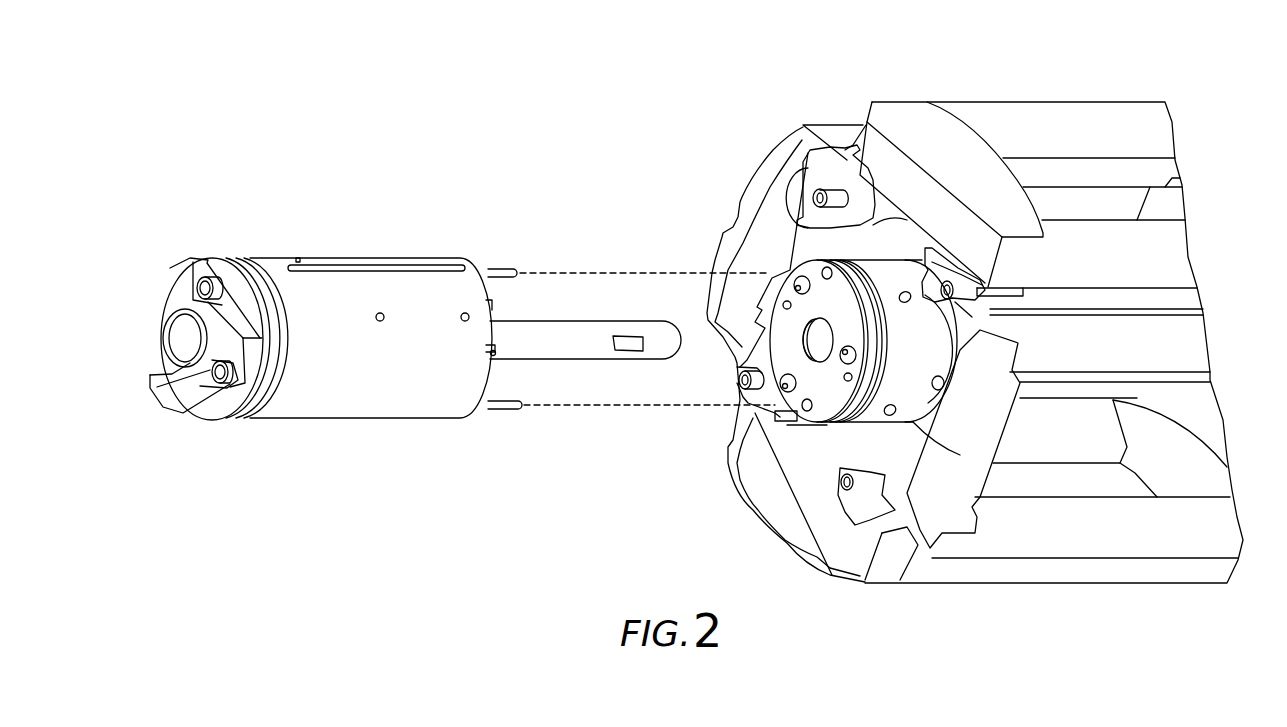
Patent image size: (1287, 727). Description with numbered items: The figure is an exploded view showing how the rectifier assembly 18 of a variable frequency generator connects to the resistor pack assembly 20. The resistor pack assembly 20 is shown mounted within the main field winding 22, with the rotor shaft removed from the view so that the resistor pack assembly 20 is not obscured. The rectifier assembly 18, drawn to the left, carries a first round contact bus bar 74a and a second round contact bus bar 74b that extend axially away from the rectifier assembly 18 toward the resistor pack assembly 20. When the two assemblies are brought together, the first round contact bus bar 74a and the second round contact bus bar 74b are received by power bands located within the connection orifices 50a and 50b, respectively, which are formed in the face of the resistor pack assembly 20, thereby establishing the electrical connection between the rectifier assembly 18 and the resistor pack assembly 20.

The rectifier assembly 18 is at (312, 250).
The resistor pack assembly 20 is at (876, 248).
The main field winding 22 is at (1129, 82).
The connection orifice 50a is at (820, 270).
The connection orifice 50b is at (790, 410).
The first round contact bus bar 74a is at (490, 267).
The second round contact bus bar 74b is at (498, 413).